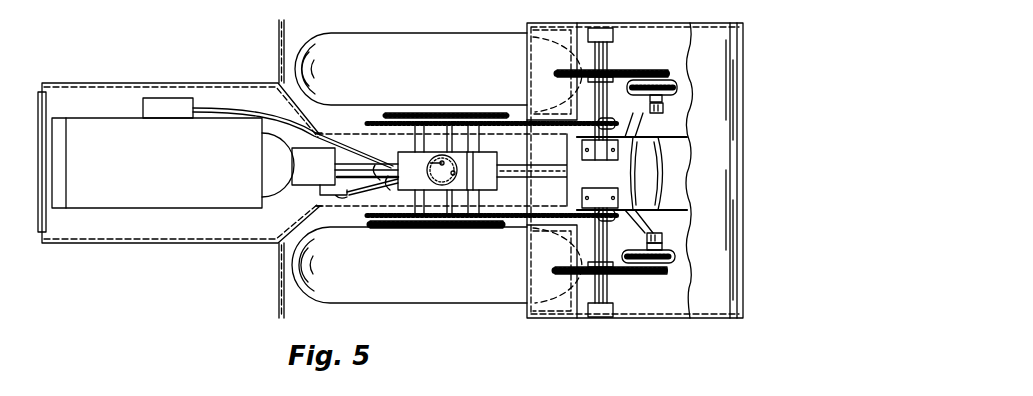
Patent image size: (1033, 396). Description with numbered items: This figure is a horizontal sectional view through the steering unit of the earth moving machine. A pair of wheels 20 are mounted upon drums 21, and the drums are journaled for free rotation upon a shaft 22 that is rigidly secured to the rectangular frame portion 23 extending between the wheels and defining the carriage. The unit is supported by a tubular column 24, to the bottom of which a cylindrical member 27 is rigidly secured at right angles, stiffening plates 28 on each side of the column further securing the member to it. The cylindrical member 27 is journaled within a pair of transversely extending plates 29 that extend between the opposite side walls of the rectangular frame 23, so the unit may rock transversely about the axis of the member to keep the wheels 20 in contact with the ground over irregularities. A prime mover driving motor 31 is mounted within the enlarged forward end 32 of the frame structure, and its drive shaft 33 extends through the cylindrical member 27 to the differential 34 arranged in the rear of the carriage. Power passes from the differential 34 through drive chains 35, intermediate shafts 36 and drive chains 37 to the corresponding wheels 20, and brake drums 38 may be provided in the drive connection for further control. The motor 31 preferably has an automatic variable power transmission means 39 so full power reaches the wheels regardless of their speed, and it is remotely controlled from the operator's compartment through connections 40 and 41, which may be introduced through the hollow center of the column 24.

The wheels 20 is at (375, 52).
The drums 21 is at (370, 110).
The shaft 22 is at (442, 170).
The rectangular frame portion 23 is at (400, 113).
The tubular column 24 is at (455, 200).
The cylindrical member 27 is at (497, 182).
The stiffening plates 28 is at (405, 153).
The transversely extending plates 29 is at (388, 197).
The driving motor 31 is at (160, 170).
The enlarged forward end 32 is at (146, 83).
The drive shaft 33 is at (346, 165).
The differential 34 is at (650, 172).
The drive chains 35 is at (622, 72).
The intermediate shafts 36 is at (598, 100).
The drive chains 37 is at (485, 113).
The brake drums 38 is at (677, 88).
The automatic variable power transmission means 39 is at (278, 165).
The connection 40 is at (252, 112).
The connection 41 is at (316, 199).